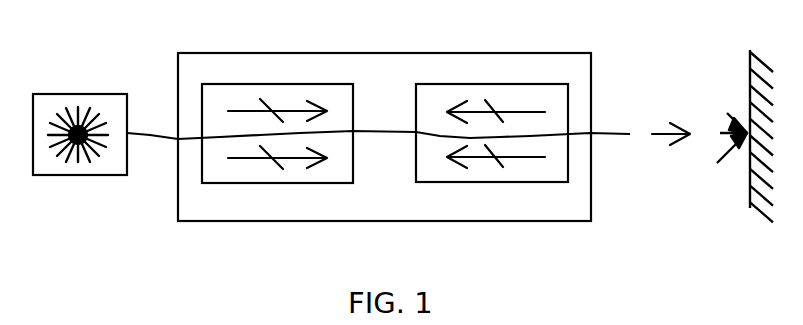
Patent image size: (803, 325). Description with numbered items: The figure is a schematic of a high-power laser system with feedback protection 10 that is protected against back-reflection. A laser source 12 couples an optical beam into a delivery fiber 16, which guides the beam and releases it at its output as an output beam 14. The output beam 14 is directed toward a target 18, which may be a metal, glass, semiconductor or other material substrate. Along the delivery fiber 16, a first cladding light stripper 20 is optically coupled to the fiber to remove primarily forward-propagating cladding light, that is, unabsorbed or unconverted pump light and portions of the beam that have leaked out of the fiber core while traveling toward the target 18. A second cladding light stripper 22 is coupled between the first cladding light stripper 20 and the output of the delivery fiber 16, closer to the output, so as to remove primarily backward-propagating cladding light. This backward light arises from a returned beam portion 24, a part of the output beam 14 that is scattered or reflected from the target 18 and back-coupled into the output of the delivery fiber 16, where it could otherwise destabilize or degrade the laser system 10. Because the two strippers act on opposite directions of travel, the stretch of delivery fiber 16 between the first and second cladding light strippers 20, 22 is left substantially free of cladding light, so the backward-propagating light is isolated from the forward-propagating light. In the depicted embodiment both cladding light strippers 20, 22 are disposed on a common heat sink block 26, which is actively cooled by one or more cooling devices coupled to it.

The high-power laser system with feedback protection 10 is at (73, 265).
The laser source 12 is at (90, 103).
The output beam 14 is at (667, 136).
The delivery fiber 16 is at (608, 132).
The target 18 is at (748, 68).
The first cladding light stripper 20 is at (288, 98).
The second cladding light stripper 22 is at (518, 93).
The returned beam portion 24 is at (727, 137).
The common heat sink block 26 is at (330, 209).